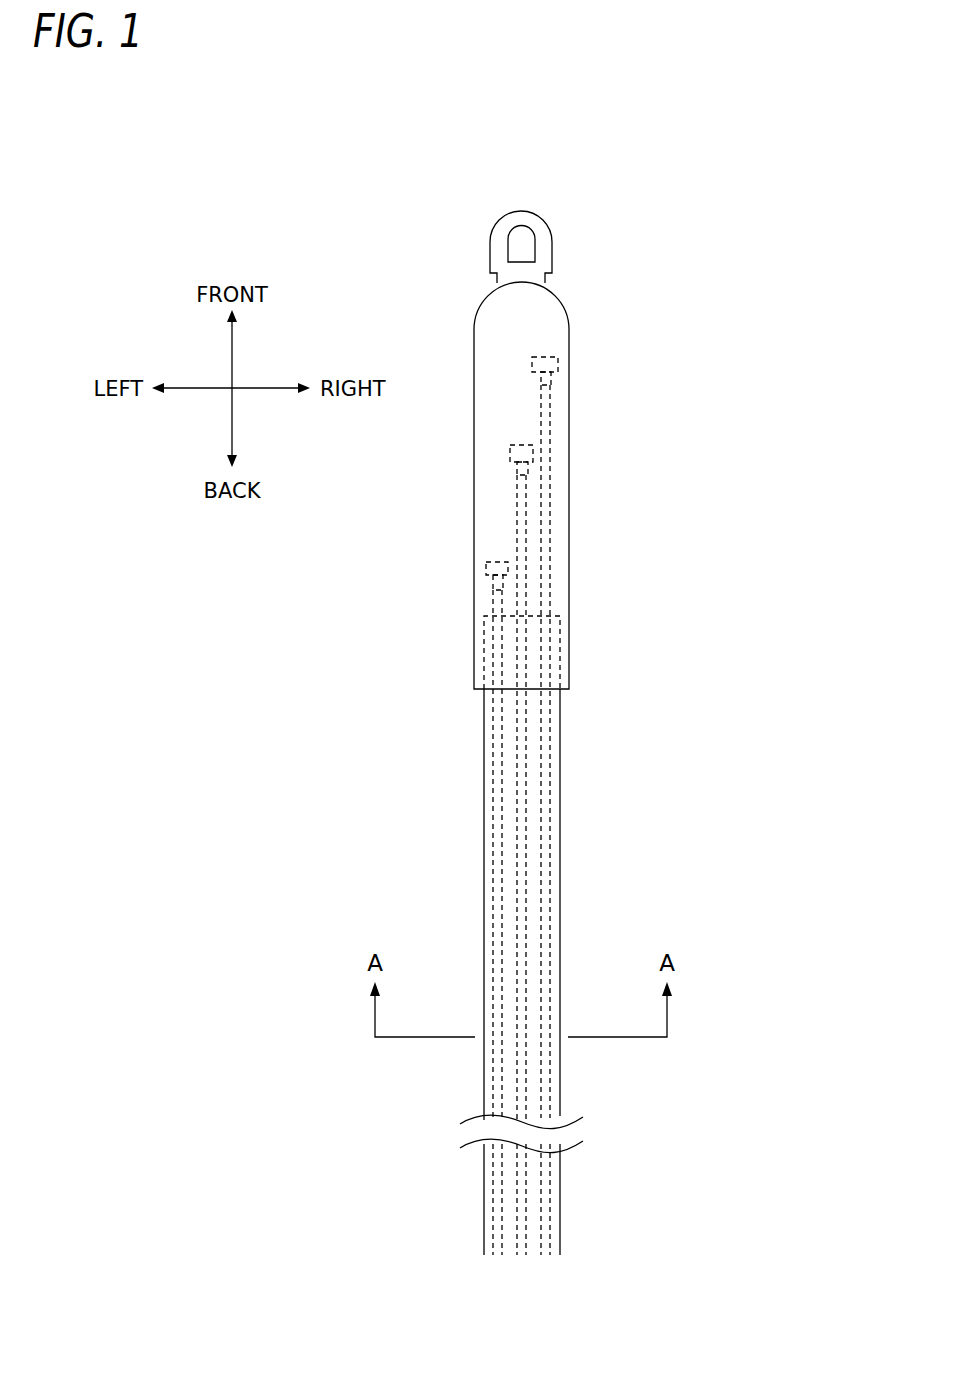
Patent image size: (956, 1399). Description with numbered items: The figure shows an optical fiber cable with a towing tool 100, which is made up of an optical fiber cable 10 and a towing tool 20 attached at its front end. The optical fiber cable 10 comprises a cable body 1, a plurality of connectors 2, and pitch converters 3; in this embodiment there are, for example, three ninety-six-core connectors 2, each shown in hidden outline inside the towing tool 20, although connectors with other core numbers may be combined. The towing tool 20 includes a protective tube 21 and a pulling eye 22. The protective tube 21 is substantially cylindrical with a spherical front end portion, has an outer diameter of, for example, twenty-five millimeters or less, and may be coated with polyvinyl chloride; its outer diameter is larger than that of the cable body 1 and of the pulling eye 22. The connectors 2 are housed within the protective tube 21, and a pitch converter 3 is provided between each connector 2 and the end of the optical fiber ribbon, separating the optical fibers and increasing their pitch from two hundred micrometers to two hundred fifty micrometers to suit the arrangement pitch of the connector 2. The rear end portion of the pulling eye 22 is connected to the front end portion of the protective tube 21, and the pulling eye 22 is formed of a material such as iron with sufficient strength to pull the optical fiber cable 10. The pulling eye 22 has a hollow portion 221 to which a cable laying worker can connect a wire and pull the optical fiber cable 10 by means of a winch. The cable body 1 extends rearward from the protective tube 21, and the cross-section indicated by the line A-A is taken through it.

The optical fiber cable with a towing tool 100 is at (740, 175).
The towing tool 20 is at (655, 228).
The pulling eye 22 is at (541, 220).
The hollow portion 221 is at (509, 234).
The protective tube 21 is at (565, 302).
The optical fiber cable 10 is at (566, 813).
The cable body 1 is at (562, 895).
The connector 2 is at (558, 367).
The pitch converter 3 is at (551, 378).